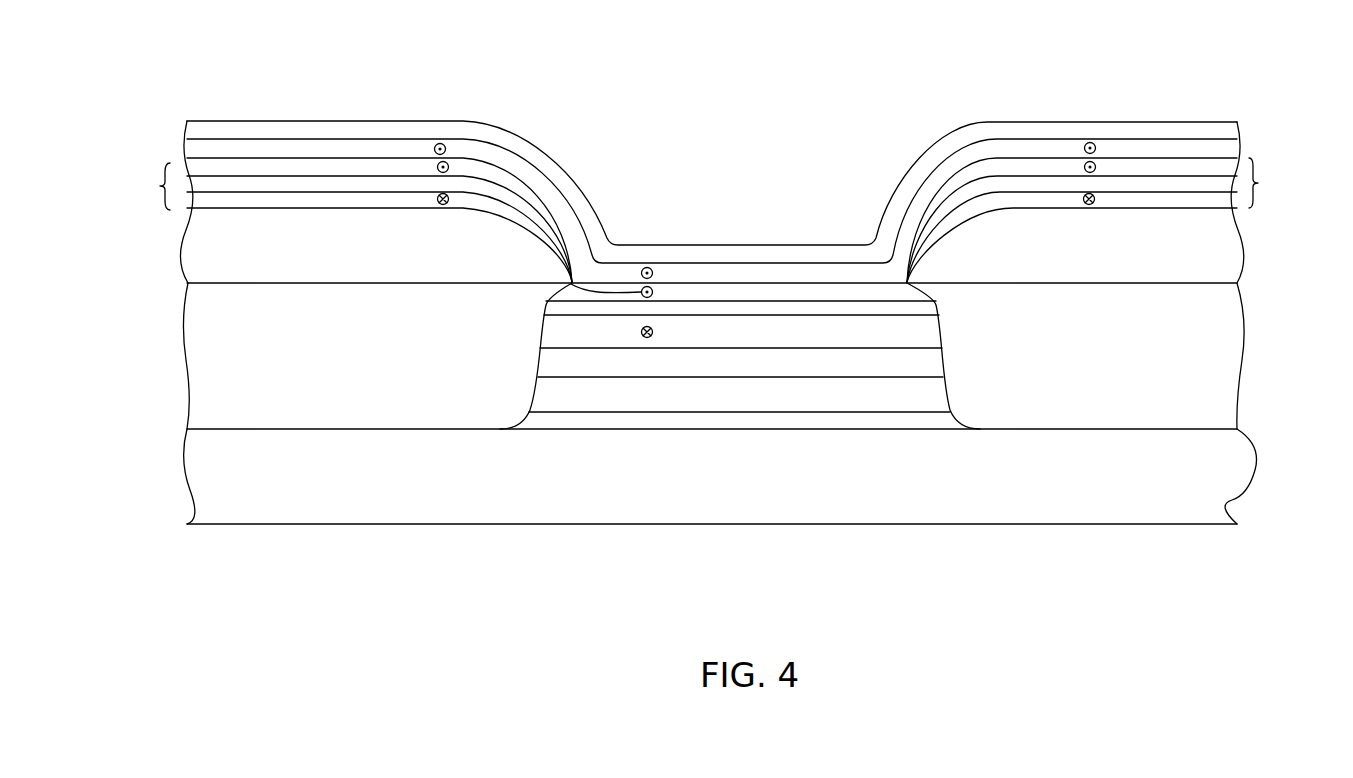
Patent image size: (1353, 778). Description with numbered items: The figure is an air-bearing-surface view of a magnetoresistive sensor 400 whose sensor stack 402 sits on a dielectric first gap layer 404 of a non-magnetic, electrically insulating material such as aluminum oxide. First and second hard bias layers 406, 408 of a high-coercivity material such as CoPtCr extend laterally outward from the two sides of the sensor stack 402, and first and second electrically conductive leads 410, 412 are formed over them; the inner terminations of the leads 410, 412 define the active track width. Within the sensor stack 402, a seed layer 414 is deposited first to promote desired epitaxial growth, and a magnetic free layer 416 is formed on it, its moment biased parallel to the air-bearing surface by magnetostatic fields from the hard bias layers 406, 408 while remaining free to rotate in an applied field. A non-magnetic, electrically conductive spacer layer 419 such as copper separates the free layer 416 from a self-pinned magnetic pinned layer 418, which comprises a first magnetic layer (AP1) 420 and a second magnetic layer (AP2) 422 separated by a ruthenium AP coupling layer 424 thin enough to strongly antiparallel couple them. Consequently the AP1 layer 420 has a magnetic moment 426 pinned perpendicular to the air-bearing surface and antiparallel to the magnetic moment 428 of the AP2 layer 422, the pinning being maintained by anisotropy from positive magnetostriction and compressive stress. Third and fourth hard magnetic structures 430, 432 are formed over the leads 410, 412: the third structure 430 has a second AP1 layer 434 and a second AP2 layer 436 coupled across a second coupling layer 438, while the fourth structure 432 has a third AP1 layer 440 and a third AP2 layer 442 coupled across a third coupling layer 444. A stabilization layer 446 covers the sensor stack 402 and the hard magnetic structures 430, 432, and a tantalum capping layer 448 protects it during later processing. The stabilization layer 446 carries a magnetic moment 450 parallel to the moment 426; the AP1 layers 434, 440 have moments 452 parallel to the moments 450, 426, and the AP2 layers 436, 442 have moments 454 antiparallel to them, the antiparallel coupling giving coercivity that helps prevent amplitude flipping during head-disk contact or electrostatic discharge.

The magnetoresistive sensor 400 is at (808, 96).
The sensor stack 402 is at (533, 354).
The dielectric first gap layer 404 is at (672, 483).
The first hard bias layer 406 is at (1086, 356).
The second hard bias layer 408 is at (268, 352).
The first electrically conductive lead 410 is at (998, 248).
The second electrically conductive lead 412 is at (266, 261).
The seed layer 414 is at (798, 427).
The magnetic free layer 416 is at (803, 393).
The magnetic pinned layer 418 is at (620, 395).
The spacer layer 419 is at (690, 363).
The first magnetic layer (AP1) 420 is at (674, 293).
The second magnetic layer (AP2) 422 is at (690, 335).
The AP coupling layer 424 is at (790, 303).
The magnetic moment of the AP1 layer 426 is at (571, 284).
The magnetic moment of the AP2 layer 428 is at (641, 333).
The third hard magnetic structure 430 is at (1259, 183).
The fourth hard magnetic structure 432 is at (167, 165).
The second AP1 layer 434 is at (1173, 168).
The second AP2 layer 436 is at (1202, 198).
The second coupling layer 438 is at (1207, 187).
The third AP1 layer 440 is at (205, 170).
The third AP2 layer 442 is at (270, 200).
The third coupling layer 444 is at (254, 182).
The stabilization layer 446 is at (716, 275).
The capping layer 448 is at (772, 256).
The magnetic moment of the stabilization layer 450 is at (446, 149).
The magnetic moments of the second and third AP1 layers 452 is at (438, 167).
The magnetic moments of the second and third AP2 layers 454 is at (441, 204).